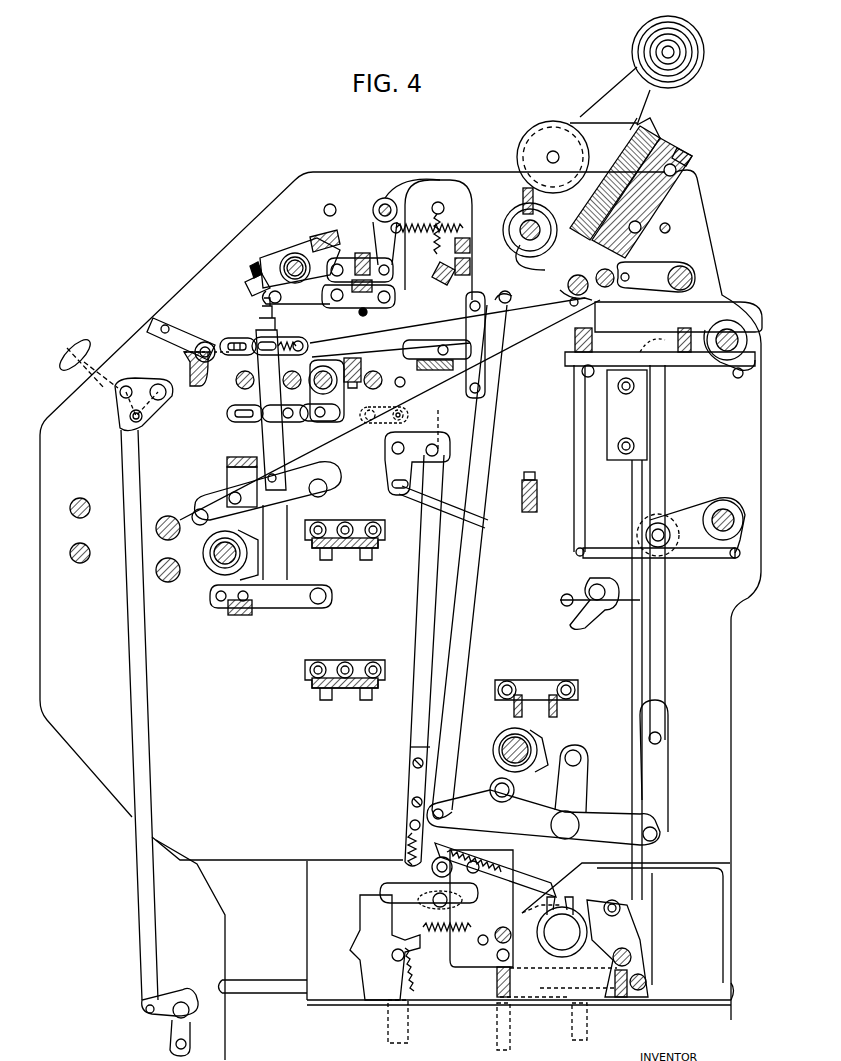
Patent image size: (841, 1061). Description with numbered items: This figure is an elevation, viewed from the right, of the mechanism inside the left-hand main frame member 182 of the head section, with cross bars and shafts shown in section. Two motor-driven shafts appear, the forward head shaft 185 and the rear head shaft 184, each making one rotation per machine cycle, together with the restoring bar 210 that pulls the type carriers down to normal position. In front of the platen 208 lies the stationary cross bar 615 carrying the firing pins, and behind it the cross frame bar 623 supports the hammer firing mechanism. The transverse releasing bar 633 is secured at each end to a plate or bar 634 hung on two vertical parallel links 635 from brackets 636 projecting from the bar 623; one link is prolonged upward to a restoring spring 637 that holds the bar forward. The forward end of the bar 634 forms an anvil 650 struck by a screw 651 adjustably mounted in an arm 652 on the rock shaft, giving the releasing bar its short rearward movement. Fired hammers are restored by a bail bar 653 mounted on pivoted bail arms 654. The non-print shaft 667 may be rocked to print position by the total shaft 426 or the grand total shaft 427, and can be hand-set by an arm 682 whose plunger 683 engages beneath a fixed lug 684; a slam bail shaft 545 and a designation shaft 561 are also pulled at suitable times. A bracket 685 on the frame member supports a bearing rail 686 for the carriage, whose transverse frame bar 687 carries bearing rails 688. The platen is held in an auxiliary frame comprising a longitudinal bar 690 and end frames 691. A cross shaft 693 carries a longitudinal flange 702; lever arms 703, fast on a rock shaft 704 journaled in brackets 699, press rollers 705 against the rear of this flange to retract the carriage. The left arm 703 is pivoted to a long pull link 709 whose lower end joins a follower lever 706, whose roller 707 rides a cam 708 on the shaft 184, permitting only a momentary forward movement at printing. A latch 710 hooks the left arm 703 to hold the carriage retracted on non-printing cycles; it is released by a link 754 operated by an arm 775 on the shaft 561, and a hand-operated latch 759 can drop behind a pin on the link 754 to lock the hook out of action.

The main frame member 182 is at (258, 232).
The rear head shaft 184 is at (510, 734).
The forward head shaft 185 is at (215, 572).
The platen 208 is at (553, 213).
The restoring bar 210 is at (537, 492).
The total shaft 426 is at (332, 386).
The grand total shaft 427 is at (375, 374).
The slam bail shaft 545 is at (330, 346).
The designation shaft 561 is at (238, 392).
The stationary cross bar 615 is at (468, 232).
The cross frame bar 623 is at (360, 253).
The releasing bar 633 is at (370, 312).
The plate or bar 634 is at (360, 290).
The vertical parallel links 635 is at (403, 220).
The brackets 636 is at (332, 242).
The restoring spring 637 is at (460, 217).
The anvil 650 is at (266, 298).
The screw 651 is at (256, 265).
The arm 652 is at (258, 282).
The bail bar 653 is at (470, 248).
The bail arms 654 is at (470, 268).
The non-print shaft 667 is at (388, 208).
The arm 682 is at (385, 198).
The plunger 683 is at (331, 204).
The fixed lug 684 is at (328, 205).
The bracket 685 is at (706, 246).
The bearing rail 686 is at (653, 205).
The transverse frame bar 687 is at (680, 150).
The bearing rails 688 is at (690, 165).
The longitudinal bar 690 is at (662, 130).
The end frames 691 is at (648, 118).
The cross shaft 693 is at (568, 262).
The brackets 699 is at (646, 632).
The longitudinal flange 702 is at (567, 281).
The lever arms 703 is at (549, 460).
The rock shaft 704 is at (582, 350).
The roller 705 is at (596, 298).
The follower lever 706 is at (518, 826).
The roller 707 is at (494, 782).
The cam 708 is at (496, 748).
The pull link 709 is at (462, 672).
The latch 710 is at (505, 292).
The link 754 is at (403, 330).
The hand-operated latch 759 is at (175, 338).
The arm 775 is at (240, 366).